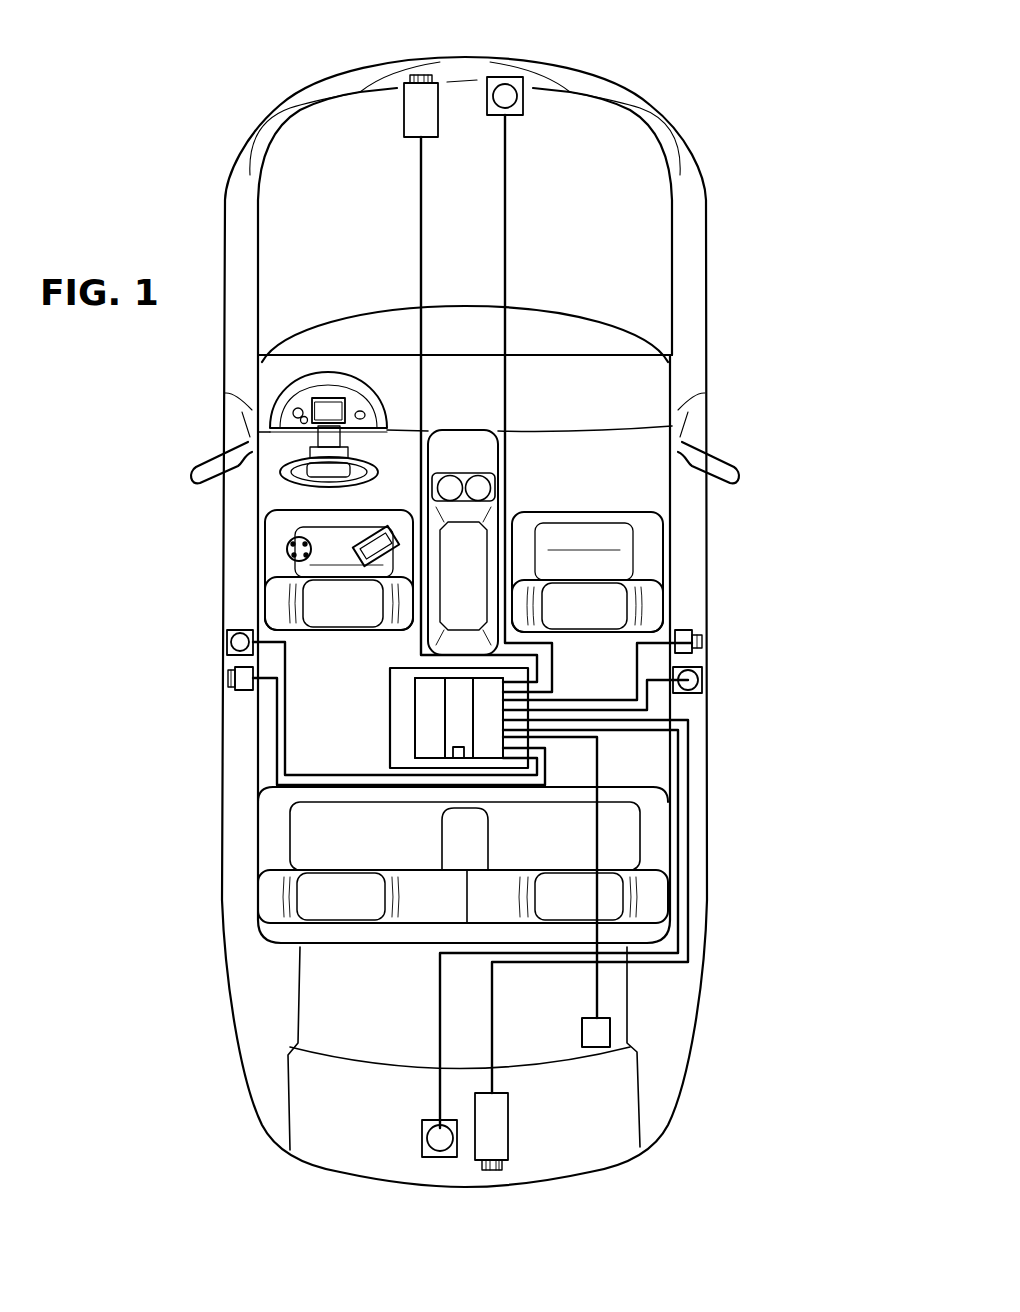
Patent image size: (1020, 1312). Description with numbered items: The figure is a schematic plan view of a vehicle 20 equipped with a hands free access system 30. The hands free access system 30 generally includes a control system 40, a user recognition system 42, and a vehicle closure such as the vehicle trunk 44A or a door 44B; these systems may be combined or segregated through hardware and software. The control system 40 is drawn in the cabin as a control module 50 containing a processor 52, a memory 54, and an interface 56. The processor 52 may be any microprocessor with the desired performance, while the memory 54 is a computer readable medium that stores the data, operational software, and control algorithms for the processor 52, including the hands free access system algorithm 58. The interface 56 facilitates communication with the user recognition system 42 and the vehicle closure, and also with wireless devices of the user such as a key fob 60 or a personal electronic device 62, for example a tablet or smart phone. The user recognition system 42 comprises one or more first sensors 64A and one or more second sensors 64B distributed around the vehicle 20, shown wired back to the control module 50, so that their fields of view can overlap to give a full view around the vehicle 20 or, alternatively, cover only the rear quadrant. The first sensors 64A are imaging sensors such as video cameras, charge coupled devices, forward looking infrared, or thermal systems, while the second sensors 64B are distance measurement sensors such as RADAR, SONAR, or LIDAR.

The vehicle 20 is at (729, 173).
The hands free access system 30 is at (636, 792).
The control system 40 is at (379, 692).
The user recognition system 42 is at (382, 1105).
The vehicle trunk 44A is at (599, 1111).
The door 44B is at (237, 710).
The control module 50 is at (413, 757).
The processor 52 is at (442, 740).
The memory 54 is at (471, 740).
The interface 56 is at (501, 740).
The hands free access system algorithm 58 is at (458, 760).
The key fob 60 is at (287, 549).
The personal electronic device 62 is at (383, 533).
The first sensors 64A is at (420, 97).
The second sensors 64B is at (505, 95).